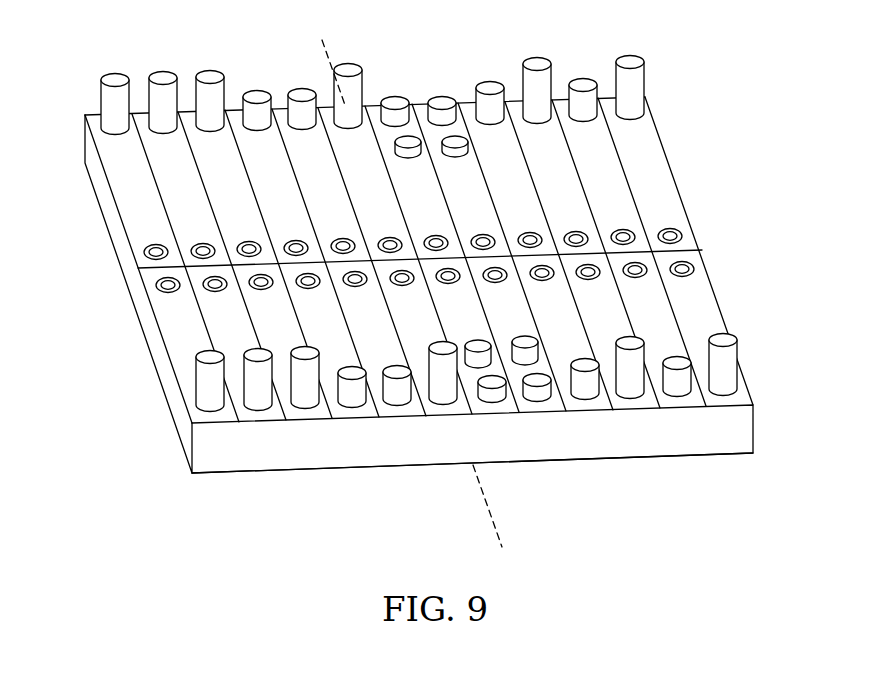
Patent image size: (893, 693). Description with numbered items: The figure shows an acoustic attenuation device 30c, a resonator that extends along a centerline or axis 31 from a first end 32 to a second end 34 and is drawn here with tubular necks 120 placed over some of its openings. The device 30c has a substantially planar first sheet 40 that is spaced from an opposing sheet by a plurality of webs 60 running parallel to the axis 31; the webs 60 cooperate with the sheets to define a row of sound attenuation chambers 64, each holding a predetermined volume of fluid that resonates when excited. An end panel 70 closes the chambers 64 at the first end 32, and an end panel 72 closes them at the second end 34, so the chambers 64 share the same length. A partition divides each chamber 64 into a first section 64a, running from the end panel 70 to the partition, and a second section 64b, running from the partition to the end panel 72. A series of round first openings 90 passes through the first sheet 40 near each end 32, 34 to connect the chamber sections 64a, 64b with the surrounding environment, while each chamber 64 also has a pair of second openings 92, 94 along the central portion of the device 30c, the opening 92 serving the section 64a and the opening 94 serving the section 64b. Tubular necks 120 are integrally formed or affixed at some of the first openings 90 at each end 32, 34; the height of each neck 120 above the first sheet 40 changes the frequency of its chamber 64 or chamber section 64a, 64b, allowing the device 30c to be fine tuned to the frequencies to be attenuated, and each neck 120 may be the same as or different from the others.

The second end 34 is at (656, 40).
The first openings 90 is at (652, 104).
The attenuator device 30c is at (696, 100).
The second chamber section 64b is at (652, 160).
The sound attenuation chambers 64 is at (659, 195).
The second opening 94 is at (147, 251).
The second opening 92 is at (160, 292).
The first chamber section 64a is at (697, 300).
The webs 60 is at (717, 295).
The end panel 70 is at (742, 422).
The tubular necks 120 is at (530, 85).
The axis 31 is at (498, 528).
The first end 32 is at (323, 485).
The first sheet 40 is at (178, 362).
The end panel 72 is at (378, 102).